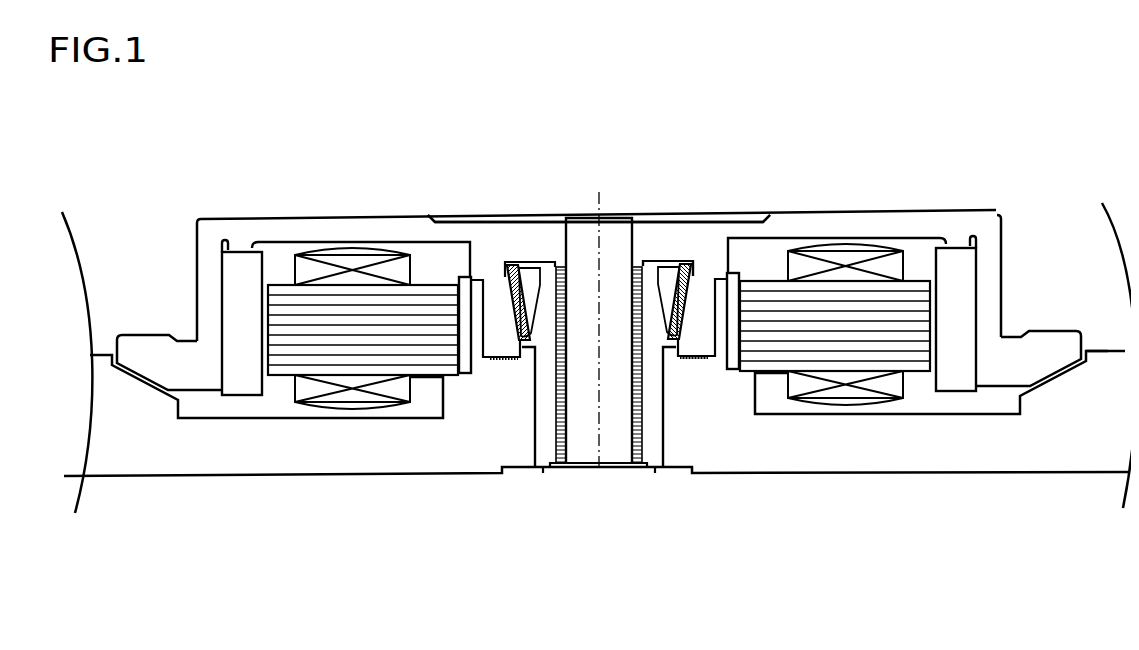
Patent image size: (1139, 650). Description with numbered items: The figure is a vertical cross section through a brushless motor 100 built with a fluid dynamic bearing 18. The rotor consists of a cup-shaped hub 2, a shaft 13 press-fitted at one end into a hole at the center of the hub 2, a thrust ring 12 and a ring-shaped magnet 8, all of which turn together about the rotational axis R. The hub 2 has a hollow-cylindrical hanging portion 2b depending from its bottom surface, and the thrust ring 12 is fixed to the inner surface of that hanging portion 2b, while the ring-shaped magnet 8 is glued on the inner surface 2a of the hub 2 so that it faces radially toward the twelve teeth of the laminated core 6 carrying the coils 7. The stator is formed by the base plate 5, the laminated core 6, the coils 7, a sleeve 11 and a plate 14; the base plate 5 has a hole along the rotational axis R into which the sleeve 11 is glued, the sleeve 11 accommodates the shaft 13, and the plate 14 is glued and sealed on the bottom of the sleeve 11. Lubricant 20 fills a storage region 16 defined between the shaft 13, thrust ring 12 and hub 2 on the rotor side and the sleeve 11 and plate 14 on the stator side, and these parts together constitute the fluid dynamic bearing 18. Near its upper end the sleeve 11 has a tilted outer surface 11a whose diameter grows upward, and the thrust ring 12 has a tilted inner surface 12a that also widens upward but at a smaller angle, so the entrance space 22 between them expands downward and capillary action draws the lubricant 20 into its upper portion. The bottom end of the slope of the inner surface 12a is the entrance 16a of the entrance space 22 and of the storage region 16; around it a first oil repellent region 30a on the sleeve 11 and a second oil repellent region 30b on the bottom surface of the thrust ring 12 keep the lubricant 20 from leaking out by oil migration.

The brushless motor 100 is at (597, 558).
The hub 2 is at (362, 220).
The inner surface 2a is at (222, 276).
The hanging portion 2b is at (478, 318).
The base plate 5 is at (128, 470).
The laminated core 6 is at (287, 368).
The coils 7 is at (338, 402).
The ring-shaped magnet 8 is at (240, 382).
The sleeve 11 is at (548, 262).
The outer surface 11a is at (532, 275).
The thrust ring 12 is at (482, 283).
The inner surface 12a is at (492, 362).
The shaft 13 is at (577, 218).
The plate 14 is at (563, 476).
The storage region 16 is at (666, 292).
The entrance 16a is at (680, 372).
The fluid dynamic bearing 18 is at (599, 218).
The lubricant 20 is at (528, 355).
The entrance space 22 is at (472, 300).
The first oil repellent region 30a is at (527, 355).
The second oil repellent region 30b is at (520, 360).
The rotational axis R is at (600, 192).